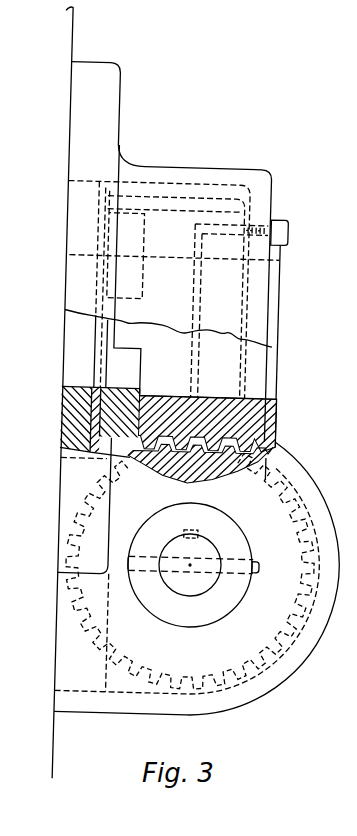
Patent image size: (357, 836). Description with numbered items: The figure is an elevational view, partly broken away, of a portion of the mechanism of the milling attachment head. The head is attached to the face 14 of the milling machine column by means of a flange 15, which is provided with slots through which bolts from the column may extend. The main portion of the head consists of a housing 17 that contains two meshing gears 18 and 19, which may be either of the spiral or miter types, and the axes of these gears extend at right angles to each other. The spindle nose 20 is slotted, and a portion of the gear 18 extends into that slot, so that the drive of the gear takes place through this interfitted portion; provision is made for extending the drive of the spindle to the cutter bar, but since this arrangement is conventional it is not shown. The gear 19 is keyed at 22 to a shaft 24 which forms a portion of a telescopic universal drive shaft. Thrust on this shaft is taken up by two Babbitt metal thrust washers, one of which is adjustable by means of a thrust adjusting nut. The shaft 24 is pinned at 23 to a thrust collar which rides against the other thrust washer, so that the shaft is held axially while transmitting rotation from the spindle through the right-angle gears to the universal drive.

The face 14 is at (60, 38).
The flange 15 is at (108, 109).
The housing 17 is at (229, 166).
The gear 18 is at (173, 272).
The gear 19 is at (178, 546).
The spindle nose 20 is at (178, 428).
The key 22 is at (197, 534).
The pin 23 is at (260, 566).
The shaft 24 is at (190, 564).